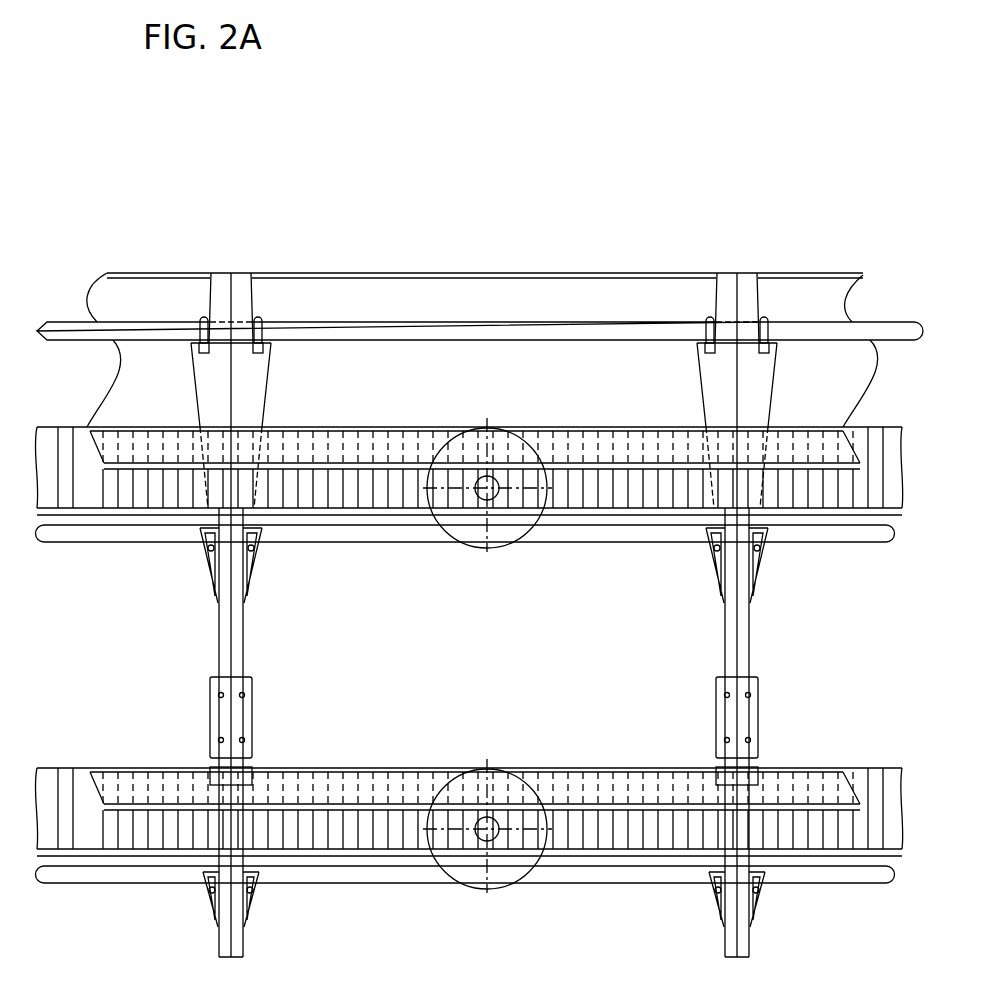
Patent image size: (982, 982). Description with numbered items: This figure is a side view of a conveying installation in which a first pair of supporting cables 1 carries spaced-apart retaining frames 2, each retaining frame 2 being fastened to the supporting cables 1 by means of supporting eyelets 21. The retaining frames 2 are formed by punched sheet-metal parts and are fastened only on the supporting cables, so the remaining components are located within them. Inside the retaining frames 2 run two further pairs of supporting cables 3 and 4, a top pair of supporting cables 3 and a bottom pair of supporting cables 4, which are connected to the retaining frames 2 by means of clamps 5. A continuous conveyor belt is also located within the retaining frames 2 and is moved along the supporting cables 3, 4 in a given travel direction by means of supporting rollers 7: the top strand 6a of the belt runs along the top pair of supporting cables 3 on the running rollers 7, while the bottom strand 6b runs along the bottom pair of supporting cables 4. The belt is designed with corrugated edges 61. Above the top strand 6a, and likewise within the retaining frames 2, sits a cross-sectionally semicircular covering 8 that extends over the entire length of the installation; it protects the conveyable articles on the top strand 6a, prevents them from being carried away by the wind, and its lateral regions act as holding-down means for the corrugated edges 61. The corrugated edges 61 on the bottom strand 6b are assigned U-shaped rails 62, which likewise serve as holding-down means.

The supporting cables 1 is at (78, 333).
The supporting eyelets 21 is at (250, 292).
The retaining frames 2 is at (228, 628).
The supporting cables 3 is at (63, 535).
The supporting cables 4 is at (97, 878).
The clamps 5 is at (213, 563).
The top strand 6a is at (306, 526).
The bottom strand 6b is at (323, 858).
The corrugated edges 61 is at (65, 805).
The U-shaped rails 62 is at (131, 768).
The supporting rollers 7 is at (517, 545).
The covering 8 is at (368, 392).